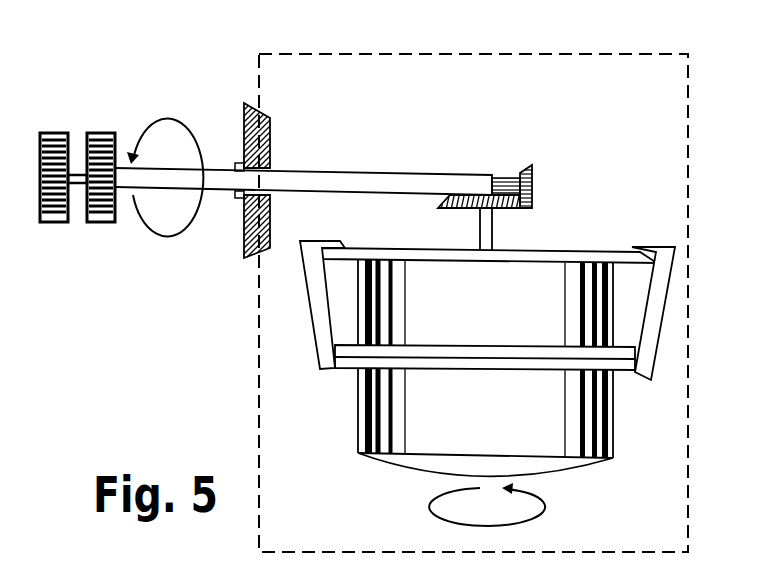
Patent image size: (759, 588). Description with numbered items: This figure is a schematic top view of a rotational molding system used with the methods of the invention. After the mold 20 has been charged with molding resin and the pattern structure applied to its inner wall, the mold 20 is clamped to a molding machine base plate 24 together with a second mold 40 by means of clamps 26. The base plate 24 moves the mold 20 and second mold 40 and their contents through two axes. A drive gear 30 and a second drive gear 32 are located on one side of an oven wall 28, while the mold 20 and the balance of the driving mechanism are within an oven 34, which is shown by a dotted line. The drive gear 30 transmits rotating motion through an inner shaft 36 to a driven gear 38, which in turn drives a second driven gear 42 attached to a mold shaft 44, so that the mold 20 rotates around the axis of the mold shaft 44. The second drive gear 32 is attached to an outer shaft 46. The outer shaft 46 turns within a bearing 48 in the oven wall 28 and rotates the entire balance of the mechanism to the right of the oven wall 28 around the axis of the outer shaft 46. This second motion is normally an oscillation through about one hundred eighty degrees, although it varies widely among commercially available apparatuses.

The mold 20 is at (356, 410).
The molding machine base plate 24 is at (600, 250).
The clamps 26 is at (320, 347).
The oven wall 28 is at (270, 133).
The drive gear 30 is at (47, 224).
The second drive gear 32 is at (102, 224).
The oven 34 is at (508, 54).
The inner shaft 36 is at (78, 174).
The driven gear 38 is at (535, 170).
The second mold 40 is at (358, 310).
The second driven gear 42 is at (513, 212).
The mold shaft 44 is at (479, 231).
The outer shaft 46 is at (219, 191).
The bearing 48 is at (243, 165).